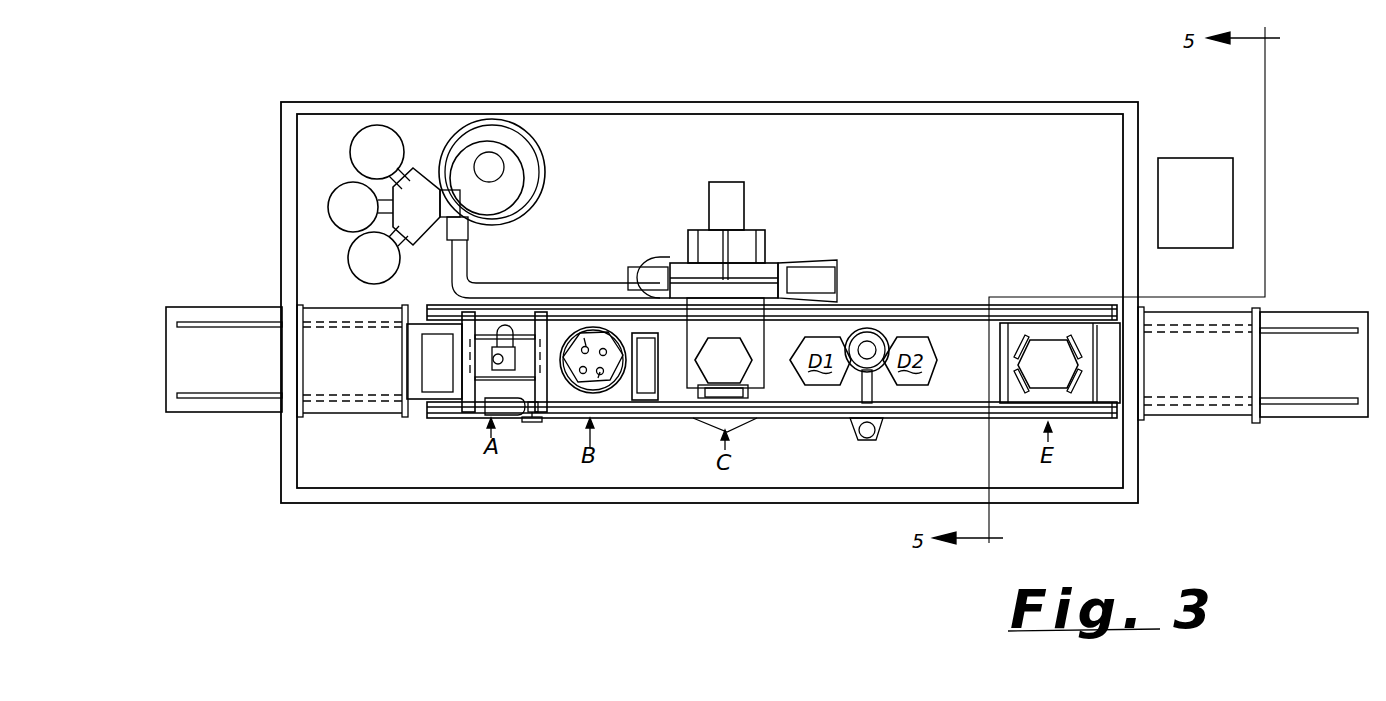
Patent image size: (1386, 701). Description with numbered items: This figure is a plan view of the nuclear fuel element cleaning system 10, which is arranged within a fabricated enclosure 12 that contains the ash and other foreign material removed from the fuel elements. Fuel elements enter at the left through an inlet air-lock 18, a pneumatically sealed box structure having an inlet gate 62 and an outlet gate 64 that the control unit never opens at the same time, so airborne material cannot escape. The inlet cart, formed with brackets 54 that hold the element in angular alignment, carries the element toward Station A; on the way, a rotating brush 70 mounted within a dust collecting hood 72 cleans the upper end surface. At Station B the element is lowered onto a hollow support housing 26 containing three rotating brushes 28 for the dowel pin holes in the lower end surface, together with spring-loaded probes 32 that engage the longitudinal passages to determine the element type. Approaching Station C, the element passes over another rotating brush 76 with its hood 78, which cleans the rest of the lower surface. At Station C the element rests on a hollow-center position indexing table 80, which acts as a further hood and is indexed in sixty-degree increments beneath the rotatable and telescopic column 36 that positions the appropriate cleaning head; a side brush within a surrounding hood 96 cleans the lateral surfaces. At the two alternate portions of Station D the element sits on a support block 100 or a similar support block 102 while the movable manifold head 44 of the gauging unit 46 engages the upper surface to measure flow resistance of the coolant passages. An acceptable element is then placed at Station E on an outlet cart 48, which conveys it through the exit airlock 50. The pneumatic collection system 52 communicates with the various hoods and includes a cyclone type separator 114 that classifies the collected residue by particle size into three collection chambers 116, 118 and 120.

The nuclear fuel element cleaning system 10 is at (970, 98).
The fabricated enclosure 12 is at (1137, 133).
The inlet air-lock 18 is at (343, 360).
The hollow support housing 26 is at (583, 393).
The rotating brushes 28 is at (588, 359).
The spring-loaded pins or probes 32 is at (587, 366).
The rotatable and telescopic column 36 is at (740, 265).
The movable manifold head 44 is at (877, 337).
The gauging unit 46 is at (1209, 226).
The outlet cart 48 is at (1082, 397).
The exit airlock 50 is at (1222, 416).
The pneumatic collection system 52 is at (540, 135).
The brackets 54 is at (1048, 364).
The inlet gate 62 is at (298, 345).
The outlet gate 64 is at (405, 309).
The rotating brush 70 is at (427, 360).
The dust collecting hood 72 is at (434, 361).
The rotating brush 76 is at (655, 347).
The hood 78 is at (665, 388).
The hollow-center position indexing table 80 is at (740, 352).
The surrounding hood 96 is at (756, 396).
The support block 100 is at (809, 381).
The support block 102 is at (920, 338).
The cyclone type separator 114 is at (527, 180).
The collection chamber 116 is at (352, 150).
The collection chamber 118 is at (348, 182).
The collection chamber 120 is at (352, 250).